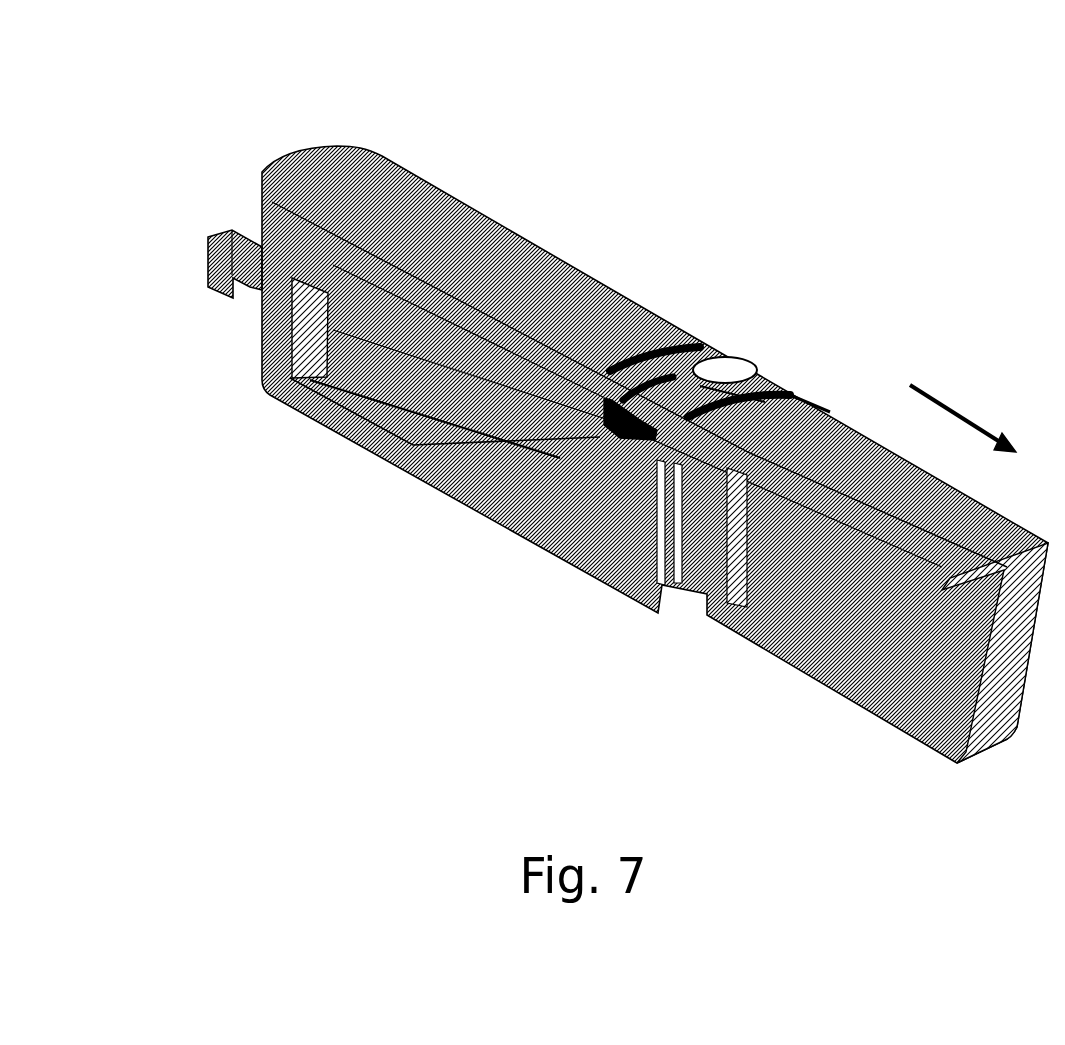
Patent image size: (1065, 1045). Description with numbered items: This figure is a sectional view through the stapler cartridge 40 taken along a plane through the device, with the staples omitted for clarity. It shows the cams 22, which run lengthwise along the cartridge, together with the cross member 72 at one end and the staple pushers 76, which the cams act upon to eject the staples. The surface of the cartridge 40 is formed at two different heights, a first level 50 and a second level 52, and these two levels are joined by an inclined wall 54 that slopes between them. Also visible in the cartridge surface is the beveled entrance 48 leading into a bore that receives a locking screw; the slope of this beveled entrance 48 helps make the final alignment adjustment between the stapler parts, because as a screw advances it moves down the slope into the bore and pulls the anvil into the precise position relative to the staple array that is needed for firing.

The cartridge 40 is at (594, 388).
The first level of the cartridge surface 50 is at (468, 216).
The inclined wall 54 is at (623, 317).
The second level of the cartridge surface 52 is at (660, 327).
The beveled entrance 48 is at (733, 357).
The cross member 72 is at (270, 340).
The staple pushers 76 is at (608, 435).
The cams 22 is at (598, 527).